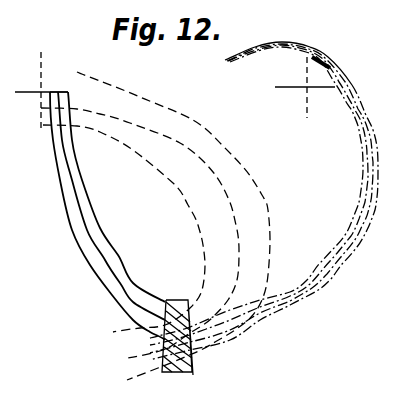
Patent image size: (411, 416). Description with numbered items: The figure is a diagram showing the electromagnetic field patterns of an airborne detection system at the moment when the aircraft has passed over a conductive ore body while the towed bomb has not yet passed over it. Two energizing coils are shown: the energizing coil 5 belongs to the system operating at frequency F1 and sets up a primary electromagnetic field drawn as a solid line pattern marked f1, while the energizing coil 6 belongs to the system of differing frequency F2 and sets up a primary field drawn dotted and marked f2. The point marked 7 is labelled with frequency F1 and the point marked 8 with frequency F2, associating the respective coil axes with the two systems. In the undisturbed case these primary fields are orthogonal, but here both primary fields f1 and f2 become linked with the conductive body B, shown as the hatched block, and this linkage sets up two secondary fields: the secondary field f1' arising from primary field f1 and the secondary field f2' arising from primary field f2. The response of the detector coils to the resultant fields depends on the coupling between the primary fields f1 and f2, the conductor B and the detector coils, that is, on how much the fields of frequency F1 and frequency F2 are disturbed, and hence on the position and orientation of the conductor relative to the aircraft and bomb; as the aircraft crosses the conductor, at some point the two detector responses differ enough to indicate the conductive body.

The energizing coil 5 is at (48, 92).
The energizing coil 6 is at (41, 68).
The intersection point F1 7 is at (303, 92).
The intersection point F2 8 is at (326, 62).
The conductive body B is at (232, 300).
The primary electromagnetic field f1 is at (107, 216).
The primary electromagnetic field f2 is at (155, 226).
The secondary field f1' is at (259, 196).
The secondary field f2' is at (264, 202).
The frequency F1 is at (300, 110).
The frequency F2 is at (9, 45).